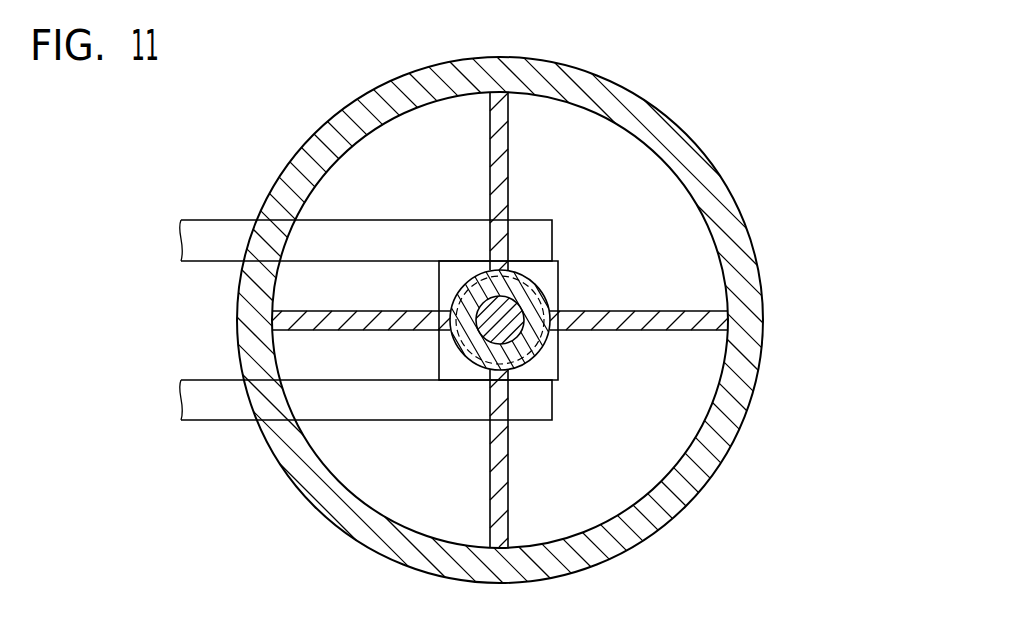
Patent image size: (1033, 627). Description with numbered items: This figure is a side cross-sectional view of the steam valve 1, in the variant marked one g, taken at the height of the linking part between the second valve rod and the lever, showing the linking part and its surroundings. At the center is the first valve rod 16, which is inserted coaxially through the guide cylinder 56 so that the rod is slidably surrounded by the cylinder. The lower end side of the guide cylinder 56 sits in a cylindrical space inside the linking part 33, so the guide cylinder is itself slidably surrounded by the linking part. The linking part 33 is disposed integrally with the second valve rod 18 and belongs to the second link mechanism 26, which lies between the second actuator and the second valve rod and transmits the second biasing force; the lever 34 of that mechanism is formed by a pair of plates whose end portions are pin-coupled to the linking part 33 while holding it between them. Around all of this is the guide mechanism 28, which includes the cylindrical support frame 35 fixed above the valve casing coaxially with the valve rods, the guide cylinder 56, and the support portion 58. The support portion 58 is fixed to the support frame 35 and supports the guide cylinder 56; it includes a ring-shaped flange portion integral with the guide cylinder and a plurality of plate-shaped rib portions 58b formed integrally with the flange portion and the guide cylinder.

The steam valve 1 is at (738, 92).
The first valve rod 16 is at (498, 300).
The second valve rod 18 is at (527, 368).
The second link mechanism 26 is at (193, 218).
The guide mechanism 28 is at (707, 145).
The linking part 33 is at (546, 277).
The lever 34 is at (235, 218).
The support frame 35 is at (742, 218).
The guide cylinder 56 is at (556, 346).
The support portion 58 is at (650, 331).
The rib portion 58b is at (617, 311).